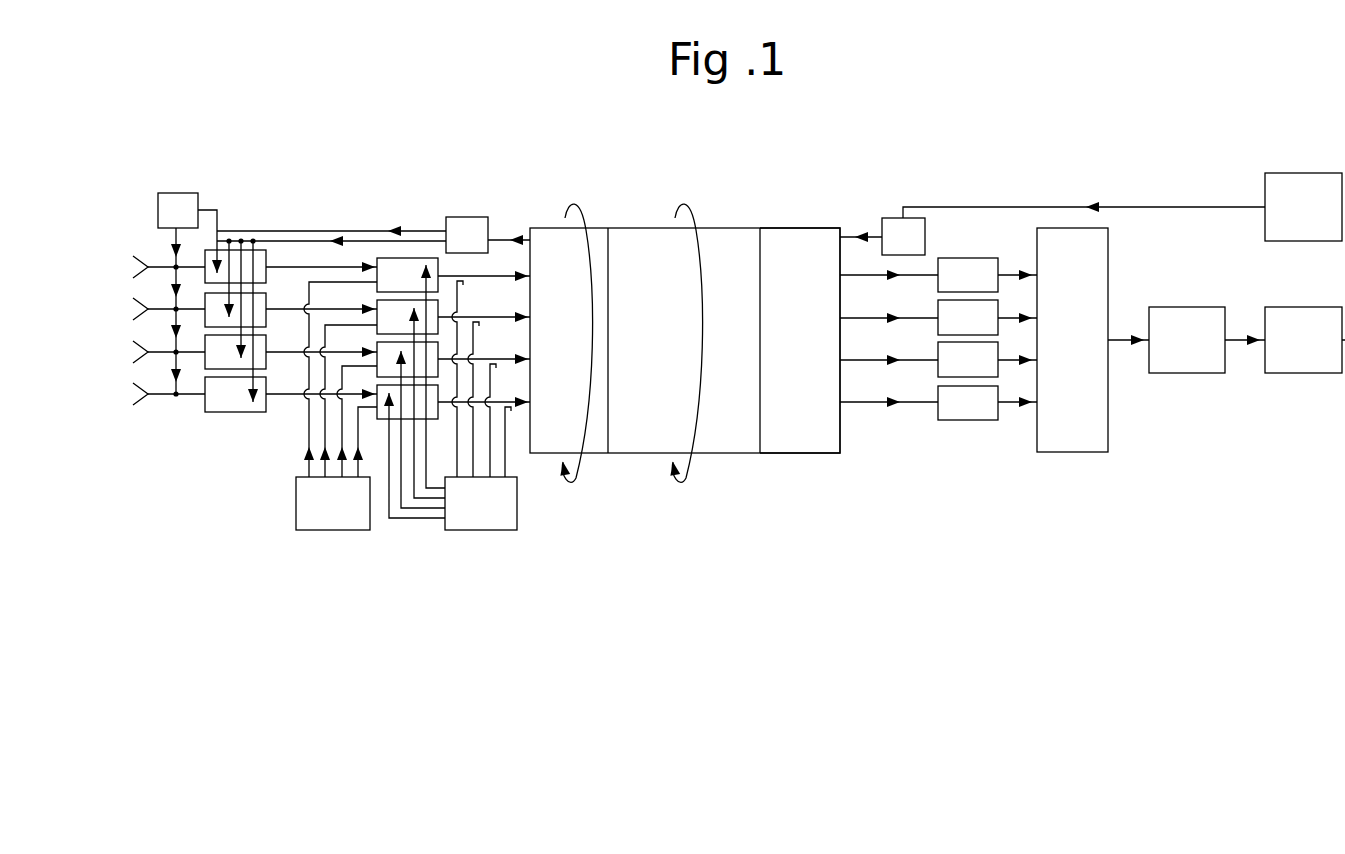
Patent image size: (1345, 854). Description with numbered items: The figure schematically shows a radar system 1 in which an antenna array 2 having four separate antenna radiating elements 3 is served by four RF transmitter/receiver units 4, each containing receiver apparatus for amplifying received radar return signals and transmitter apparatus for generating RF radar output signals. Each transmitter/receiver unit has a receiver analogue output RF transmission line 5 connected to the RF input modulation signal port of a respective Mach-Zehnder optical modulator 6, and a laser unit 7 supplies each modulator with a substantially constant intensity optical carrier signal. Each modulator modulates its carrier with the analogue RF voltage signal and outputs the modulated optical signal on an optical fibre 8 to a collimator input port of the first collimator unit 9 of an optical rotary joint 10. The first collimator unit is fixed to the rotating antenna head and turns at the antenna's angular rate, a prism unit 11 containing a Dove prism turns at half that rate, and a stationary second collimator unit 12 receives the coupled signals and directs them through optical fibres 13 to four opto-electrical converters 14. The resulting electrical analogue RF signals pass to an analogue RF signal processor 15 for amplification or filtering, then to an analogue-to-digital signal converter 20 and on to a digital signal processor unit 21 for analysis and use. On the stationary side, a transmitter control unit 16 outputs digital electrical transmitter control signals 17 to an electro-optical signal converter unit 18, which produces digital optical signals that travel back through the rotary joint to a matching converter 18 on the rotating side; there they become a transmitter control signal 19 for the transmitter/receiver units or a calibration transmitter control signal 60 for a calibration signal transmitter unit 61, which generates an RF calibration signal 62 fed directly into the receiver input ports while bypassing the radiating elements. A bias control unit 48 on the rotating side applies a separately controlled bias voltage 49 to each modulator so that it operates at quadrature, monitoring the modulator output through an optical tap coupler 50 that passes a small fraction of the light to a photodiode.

The radar system 1 is at (928, 568).
The antenna array 2 is at (112, 398).
The antenna radiating elements 3 is at (160, 395).
The RF transmitter/receiver units 4 is at (222, 402).
The receiver analogue output RF transmission line 5 is at (281, 398).
The Mach-Zehnder optical modulators 6 is at (390, 308).
The laser unit 7 is at (330, 513).
The optical fibre 8 is at (495, 272).
The first collimator unit 9 is at (597, 445).
The optical rotary joint 10 is at (713, 478).
The prism unit 11 is at (735, 443).
The second collimator unit 12 is at (789, 255).
The optical fibres 13 is at (873, 272).
The opto-electrical converters 14 is at (963, 273).
The analogue RF signal processor 15 is at (1082, 437).
The transmitter control unit 16 is at (1303, 200).
The digital electrical transmitter control signals 17 is at (1165, 205).
The electro-optical signal converter unit 18 is at (466, 240).
The transmitter control signal 19 is at (288, 240).
The analogue-to-digital signal converter 20 is at (1183, 360).
The digital signal processor unit 21 is at (1298, 355).
The bias control unit 48 is at (482, 517).
The bias voltage 49 is at (405, 520).
The optical tap coupler 50 is at (498, 448).
The calibration transmitter control signal 60 is at (216, 220).
The calibration signal transmitter unit 61 is at (172, 205).
The RF calibration signal 62 is at (168, 252).